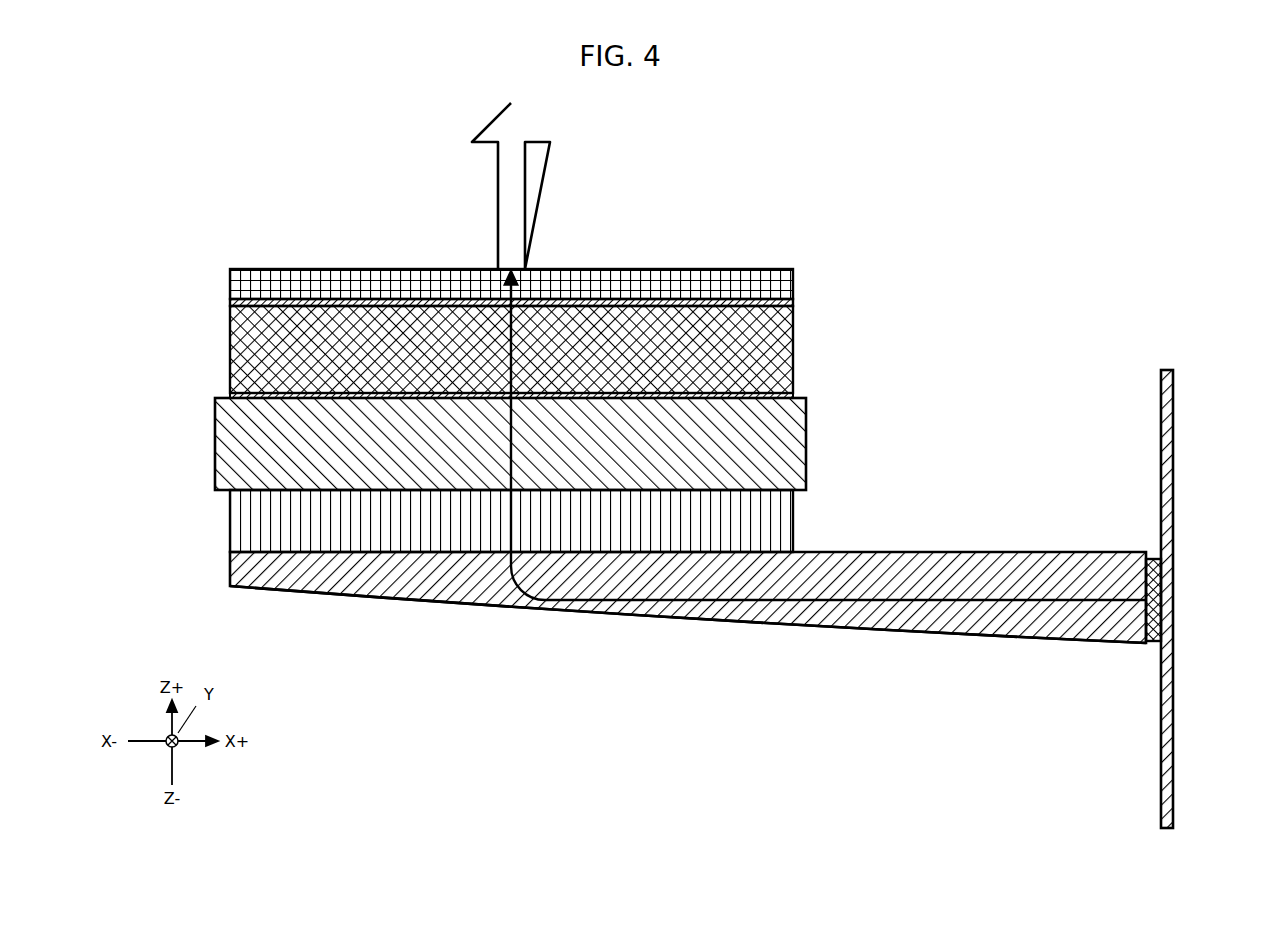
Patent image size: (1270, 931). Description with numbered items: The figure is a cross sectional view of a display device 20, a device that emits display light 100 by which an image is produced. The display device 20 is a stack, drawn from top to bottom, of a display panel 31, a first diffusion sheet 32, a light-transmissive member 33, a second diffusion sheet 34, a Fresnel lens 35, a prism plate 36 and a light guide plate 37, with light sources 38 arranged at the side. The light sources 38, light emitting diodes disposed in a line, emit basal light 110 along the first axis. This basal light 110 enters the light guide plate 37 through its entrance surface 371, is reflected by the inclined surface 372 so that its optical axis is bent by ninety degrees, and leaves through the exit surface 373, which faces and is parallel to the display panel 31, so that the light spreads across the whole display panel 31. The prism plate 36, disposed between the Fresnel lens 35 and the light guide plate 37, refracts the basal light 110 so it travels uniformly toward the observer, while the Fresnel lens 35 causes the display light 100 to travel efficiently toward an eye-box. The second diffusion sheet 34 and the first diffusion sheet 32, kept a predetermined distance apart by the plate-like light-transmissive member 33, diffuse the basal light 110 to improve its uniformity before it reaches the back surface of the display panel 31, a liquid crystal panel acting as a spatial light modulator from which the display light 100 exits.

The display device 20 is at (1026, 184).
The display light 100 is at (528, 190).
The basal light 110 is at (820, 620).
The display panel 31 is at (794, 282).
The first diffusion sheet 32 is at (794, 301).
The light-transmissive member 33 is at (794, 338).
The second diffusion sheet 34 is at (800, 396).
The Fresnel lens 35 is at (808, 444).
The prism plate 36 is at (794, 520).
The light guide plate 37 is at (1052, 645).
The entrance surface 371 is at (1174, 622).
The inclined surface 372 is at (590, 613).
The exit surface 373 is at (435, 555).
The light sources 38 is at (1152, 557).